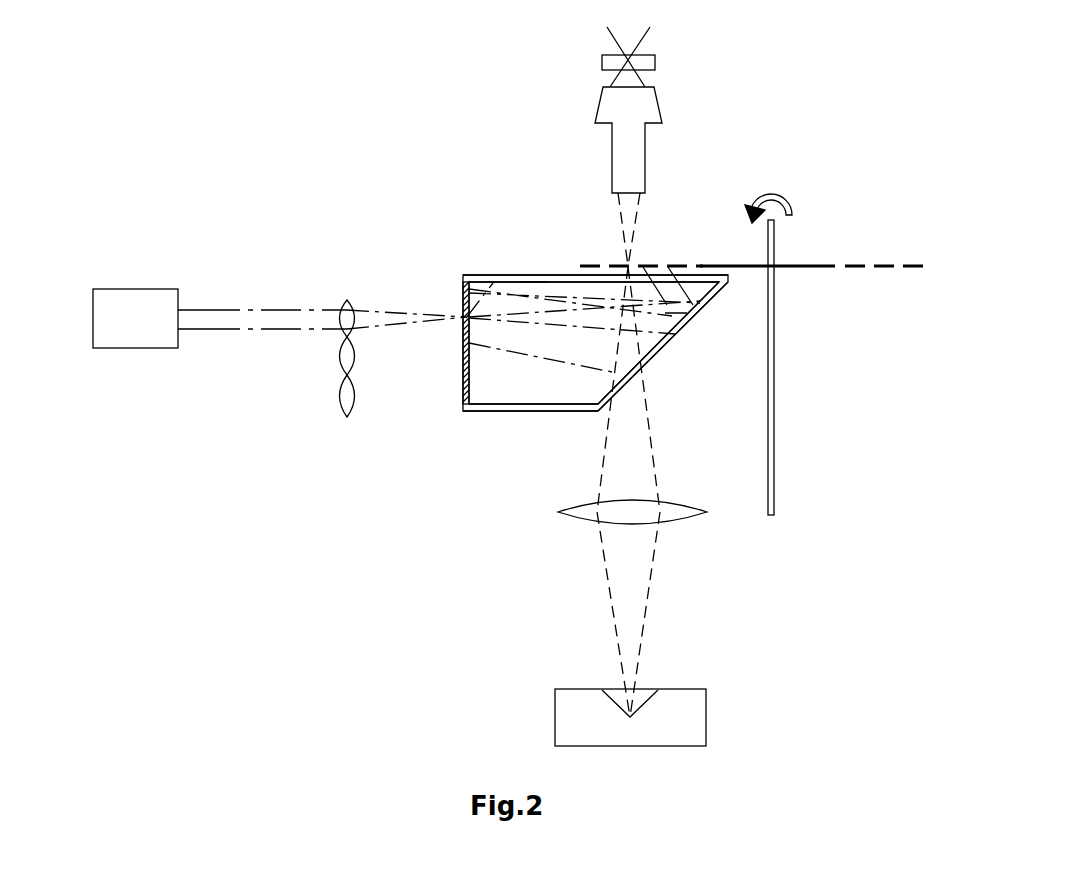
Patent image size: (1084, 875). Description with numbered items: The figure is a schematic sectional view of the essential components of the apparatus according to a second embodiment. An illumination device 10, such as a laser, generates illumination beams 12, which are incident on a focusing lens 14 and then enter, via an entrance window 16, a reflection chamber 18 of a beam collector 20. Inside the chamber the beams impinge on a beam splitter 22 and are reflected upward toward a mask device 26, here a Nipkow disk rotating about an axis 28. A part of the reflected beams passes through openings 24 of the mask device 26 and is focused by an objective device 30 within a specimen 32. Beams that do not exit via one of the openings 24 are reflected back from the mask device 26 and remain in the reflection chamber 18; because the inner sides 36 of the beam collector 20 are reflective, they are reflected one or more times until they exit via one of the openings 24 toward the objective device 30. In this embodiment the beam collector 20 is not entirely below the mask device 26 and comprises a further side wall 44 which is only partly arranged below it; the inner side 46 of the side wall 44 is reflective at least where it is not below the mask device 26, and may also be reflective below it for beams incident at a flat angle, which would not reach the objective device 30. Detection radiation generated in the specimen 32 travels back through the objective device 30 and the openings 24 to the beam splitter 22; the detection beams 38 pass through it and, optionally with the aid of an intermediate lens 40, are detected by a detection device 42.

The illumination device 10 is at (125, 302).
The illumination beams 12 is at (218, 317).
The focusing lens 14 is at (344, 316).
The entrance window 16 is at (466, 318).
The reflection chamber 18 is at (606, 358).
The beam collector 20 is at (511, 240).
The beam splitter 22 is at (666, 337).
The openings 24 is at (703, 266).
The mask device 26 is at (802, 266).
The axis 28 is at (774, 310).
The objective device 30 is at (637, 163).
The specimen 32 is at (650, 63).
The inner sides 36 is at (547, 402).
The detection beams 38 is at (627, 446).
The intermediate lens 40 is at (575, 510).
The detection device 42 is at (577, 710).
The side wall 44 is at (498, 275).
The inner side 46 is at (520, 282).